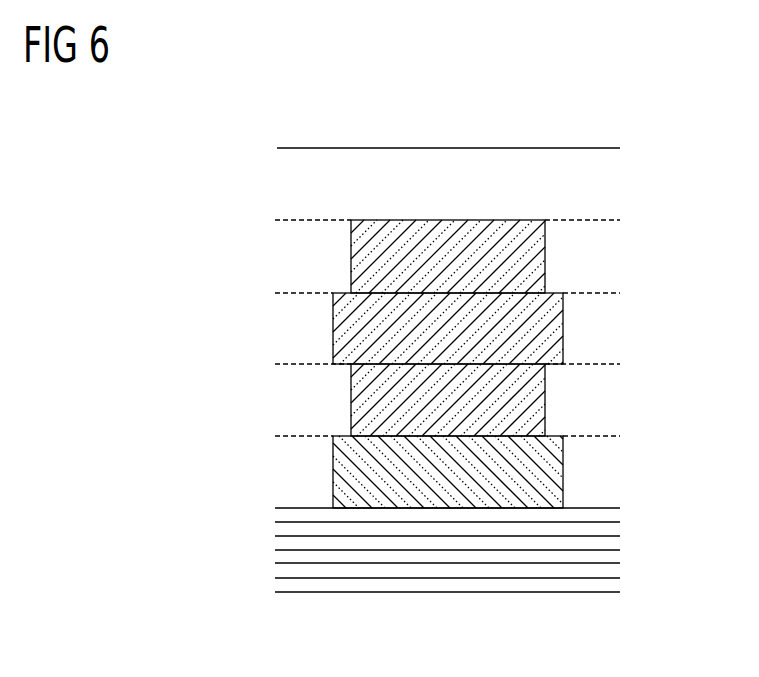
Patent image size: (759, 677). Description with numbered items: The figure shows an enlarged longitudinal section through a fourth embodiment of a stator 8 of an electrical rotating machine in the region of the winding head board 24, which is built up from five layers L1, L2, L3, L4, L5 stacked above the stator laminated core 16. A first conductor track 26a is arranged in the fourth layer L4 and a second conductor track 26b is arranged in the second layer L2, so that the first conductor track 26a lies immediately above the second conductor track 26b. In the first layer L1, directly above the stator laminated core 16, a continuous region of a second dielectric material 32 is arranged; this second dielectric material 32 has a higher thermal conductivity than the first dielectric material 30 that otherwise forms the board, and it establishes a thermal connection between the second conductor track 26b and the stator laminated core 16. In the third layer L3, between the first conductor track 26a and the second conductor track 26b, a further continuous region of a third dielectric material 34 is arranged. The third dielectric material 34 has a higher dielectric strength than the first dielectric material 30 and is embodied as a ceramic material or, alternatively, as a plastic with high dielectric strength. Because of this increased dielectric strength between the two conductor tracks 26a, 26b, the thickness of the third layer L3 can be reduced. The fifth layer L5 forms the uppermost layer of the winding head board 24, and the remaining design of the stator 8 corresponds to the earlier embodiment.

The stator 8 is at (663, 120).
The stator laminated core 16 is at (578, 584).
The winding head board 24 is at (547, 183).
The first conductor track 26a is at (352, 255).
The second conductor track 26b is at (352, 400).
The first dielectric material 30 is at (292, 184).
The second dielectric material 32 is at (334, 475).
The third dielectric material 34 is at (411, 328).
The first layer L1 is at (603, 472).
The second layer L2 is at (603, 402).
The third layer L3 is at (603, 332).
The fourth layer L4 is at (603, 257).
The fifth layer L5 is at (603, 184).